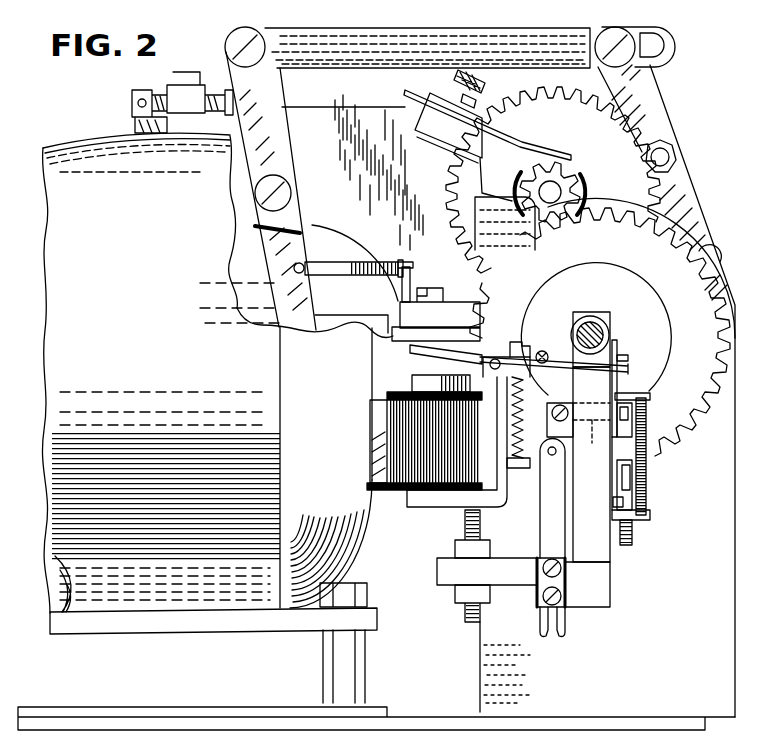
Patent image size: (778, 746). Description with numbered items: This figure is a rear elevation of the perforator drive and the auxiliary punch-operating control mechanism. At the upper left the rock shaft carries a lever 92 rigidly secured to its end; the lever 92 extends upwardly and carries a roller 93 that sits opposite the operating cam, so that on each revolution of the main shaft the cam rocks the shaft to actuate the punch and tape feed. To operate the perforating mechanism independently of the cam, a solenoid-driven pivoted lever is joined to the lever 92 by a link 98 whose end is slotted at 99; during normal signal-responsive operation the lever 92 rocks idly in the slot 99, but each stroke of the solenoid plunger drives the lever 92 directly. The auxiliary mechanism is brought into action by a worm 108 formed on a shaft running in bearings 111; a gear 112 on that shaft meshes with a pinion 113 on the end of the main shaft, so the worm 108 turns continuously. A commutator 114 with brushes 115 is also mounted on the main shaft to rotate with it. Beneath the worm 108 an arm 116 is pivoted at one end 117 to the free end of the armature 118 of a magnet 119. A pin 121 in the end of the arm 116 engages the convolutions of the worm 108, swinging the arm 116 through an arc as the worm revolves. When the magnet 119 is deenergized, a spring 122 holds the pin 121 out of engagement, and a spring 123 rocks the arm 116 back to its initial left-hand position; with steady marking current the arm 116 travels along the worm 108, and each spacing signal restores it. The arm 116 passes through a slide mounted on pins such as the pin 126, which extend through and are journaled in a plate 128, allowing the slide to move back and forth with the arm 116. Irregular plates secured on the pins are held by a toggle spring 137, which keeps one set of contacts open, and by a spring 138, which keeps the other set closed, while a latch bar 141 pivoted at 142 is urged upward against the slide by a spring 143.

The lever 92 is at (697, 207).
The roller 93 is at (684, 150).
The link 98 is at (330, 66).
The slot 99 is at (660, 66).
The worm 108 is at (582, 328).
The bearings 111 is at (577, 312).
The gear 112 is at (685, 402).
The pinion 113 is at (573, 197).
The commutator 114 is at (574, 176).
The brushes 115 is at (537, 150).
The arm 116 is at (552, 357).
The pivot end 117 is at (516, 340).
The armature 118 is at (418, 357).
The magnet 119 is at (417, 433).
The pin 121 is at (612, 352).
The spring 122 is at (522, 452).
The spring 123 is at (544, 363).
The pin 126 is at (575, 464).
The plate 128 is at (603, 549).
The toggle spring 137 is at (641, 398).
The spring 138 is at (647, 494).
The latch bar 141 is at (614, 474).
The pivot 142 is at (617, 500).
The spring 143 is at (630, 537).